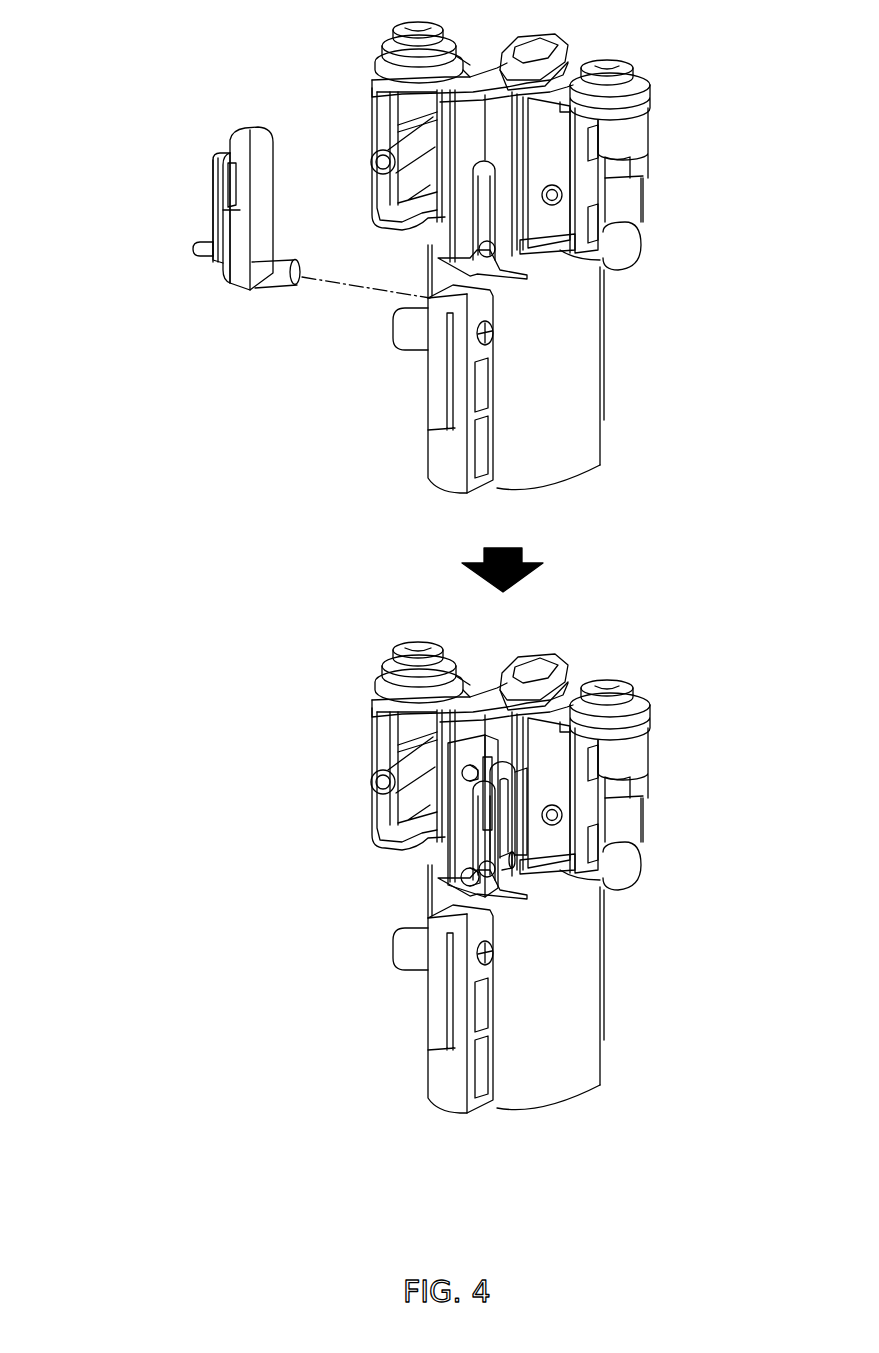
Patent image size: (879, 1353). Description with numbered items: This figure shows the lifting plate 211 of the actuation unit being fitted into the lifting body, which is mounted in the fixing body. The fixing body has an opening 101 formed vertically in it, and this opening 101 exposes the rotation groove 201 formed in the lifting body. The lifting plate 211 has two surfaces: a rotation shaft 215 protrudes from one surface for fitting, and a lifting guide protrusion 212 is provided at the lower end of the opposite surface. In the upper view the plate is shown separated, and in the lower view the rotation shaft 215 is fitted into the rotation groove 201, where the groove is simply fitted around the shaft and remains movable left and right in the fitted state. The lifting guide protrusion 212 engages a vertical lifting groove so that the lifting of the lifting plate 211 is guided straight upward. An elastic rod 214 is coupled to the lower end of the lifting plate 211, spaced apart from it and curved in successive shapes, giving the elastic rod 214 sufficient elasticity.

The opening 101 is at (446, 262).
The rotation groove 201 is at (443, 280).
The lifting plate 211 is at (265, 168).
The lifting guide protrusion 212 is at (217, 268).
The elastic rod 214 is at (207, 212).
The rotation shaft 215 is at (275, 290).